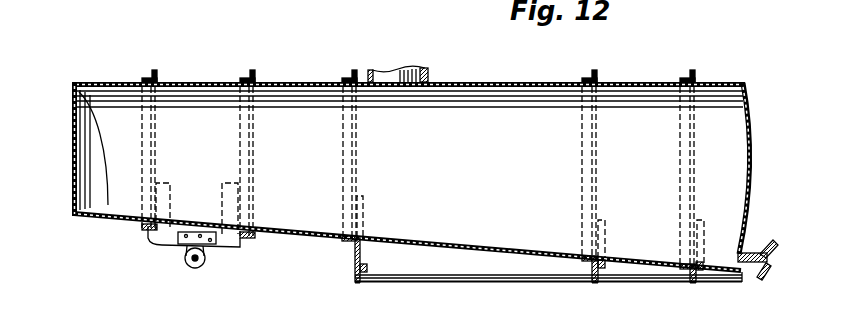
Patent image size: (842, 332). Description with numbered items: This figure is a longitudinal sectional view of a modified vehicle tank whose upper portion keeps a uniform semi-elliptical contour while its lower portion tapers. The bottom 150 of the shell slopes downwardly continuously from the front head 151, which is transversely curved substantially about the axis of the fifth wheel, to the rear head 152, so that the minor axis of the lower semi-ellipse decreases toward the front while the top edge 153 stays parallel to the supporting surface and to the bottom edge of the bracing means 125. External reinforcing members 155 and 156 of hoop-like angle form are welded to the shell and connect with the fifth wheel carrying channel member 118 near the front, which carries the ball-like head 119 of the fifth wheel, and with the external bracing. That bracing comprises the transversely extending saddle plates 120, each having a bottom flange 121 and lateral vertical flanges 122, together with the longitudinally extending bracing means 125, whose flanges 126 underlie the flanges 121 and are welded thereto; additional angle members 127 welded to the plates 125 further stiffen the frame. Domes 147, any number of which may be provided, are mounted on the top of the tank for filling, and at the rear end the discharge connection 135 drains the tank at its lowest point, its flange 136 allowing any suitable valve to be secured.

The channel member 118 is at (218, 248).
The ball-like head 119 is at (188, 265).
The saddle plates 120 is at (357, 266).
The bottom flange 121 is at (360, 283).
The lateral vertical flanges 122 is at (367, 268).
The longitudinally extending bracing means 125 is at (470, 268).
The flanges 126 is at (538, 277).
The angle members 127 is at (424, 282).
The discharge connection 135 is at (762, 250).
The flange 136 is at (763, 262).
The domes 147 is at (428, 72).
The bottom 150 is at (448, 237).
The front head 151 is at (72, 146).
The rear head 152 is at (757, 142).
The top edge 153 is at (503, 84).
The external reinforcing members 155 is at (152, 70).
The external reinforcing members 156 is at (357, 58).